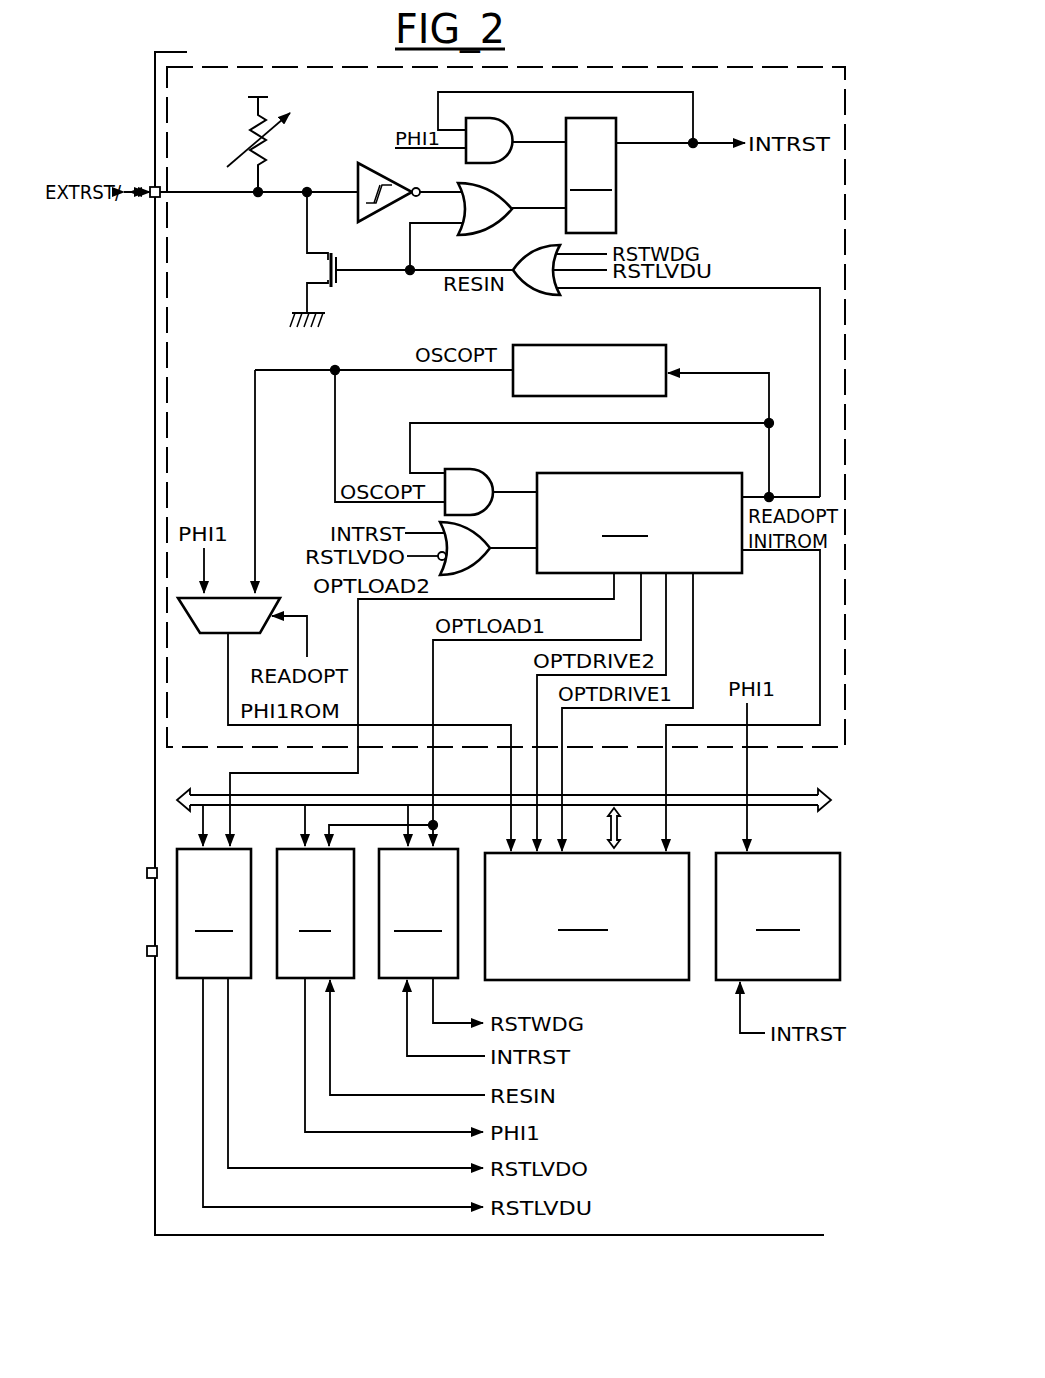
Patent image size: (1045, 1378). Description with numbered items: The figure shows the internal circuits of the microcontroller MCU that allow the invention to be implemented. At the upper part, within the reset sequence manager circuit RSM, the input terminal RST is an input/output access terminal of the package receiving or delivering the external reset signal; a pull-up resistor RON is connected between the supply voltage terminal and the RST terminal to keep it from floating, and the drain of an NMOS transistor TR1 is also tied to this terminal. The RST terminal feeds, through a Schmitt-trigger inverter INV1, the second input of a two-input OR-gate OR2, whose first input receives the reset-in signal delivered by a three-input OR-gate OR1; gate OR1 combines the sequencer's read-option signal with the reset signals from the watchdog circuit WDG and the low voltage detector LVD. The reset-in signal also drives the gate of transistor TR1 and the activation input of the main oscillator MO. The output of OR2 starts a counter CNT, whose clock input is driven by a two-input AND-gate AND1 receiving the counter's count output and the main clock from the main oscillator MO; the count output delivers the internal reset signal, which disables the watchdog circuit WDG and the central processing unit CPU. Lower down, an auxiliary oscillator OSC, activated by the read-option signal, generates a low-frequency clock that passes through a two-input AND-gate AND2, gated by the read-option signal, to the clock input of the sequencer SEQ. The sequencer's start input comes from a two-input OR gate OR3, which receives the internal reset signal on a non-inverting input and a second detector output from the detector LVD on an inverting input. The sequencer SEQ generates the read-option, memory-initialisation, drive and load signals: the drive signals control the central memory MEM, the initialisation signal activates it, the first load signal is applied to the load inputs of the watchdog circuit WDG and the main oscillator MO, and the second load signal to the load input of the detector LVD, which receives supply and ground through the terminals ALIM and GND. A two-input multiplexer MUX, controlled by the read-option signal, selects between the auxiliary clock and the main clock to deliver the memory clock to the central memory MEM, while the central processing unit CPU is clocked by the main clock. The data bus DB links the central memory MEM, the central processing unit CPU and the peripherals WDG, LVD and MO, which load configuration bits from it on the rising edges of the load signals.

The microcontroller MCU is at (155, 103).
The reset sequence manager circuit RSM is at (780, 749).
The input terminal RST is at (151, 188).
The resistor R_ON RON is at (272, 150).
The inverter INV1 is at (362, 163).
The two-input AND-gate AND1 is at (512, 152).
The two-input OR-gate OR2 is at (503, 222).
The counter CNT is at (591, 175).
The three-input OR-gate OR1 is at (522, 293).
The NMOS transistor TR1 is at (337, 283).
The auxiliary oscillator OSC is at (589, 370).
The two-input AND-gate AND2 is at (484, 468).
The two-input OR gate OR3 is at (477, 568).
The sequencer SEQ is at (639, 523).
The two-input multiplexer MUX is at (210, 623).
The data bus DB is at (768, 808).
The input terminal ALIM is at (147, 873).
The input terminal GND is at (147, 951).
The low voltage detector circuit LVD is at (214, 913).
The main oscillator MO is at (315, 913).
The watchdog circuit WDG is at (418, 913).
The central memory MEM is at (587, 916).
The central processing unit CPU is at (778, 916).